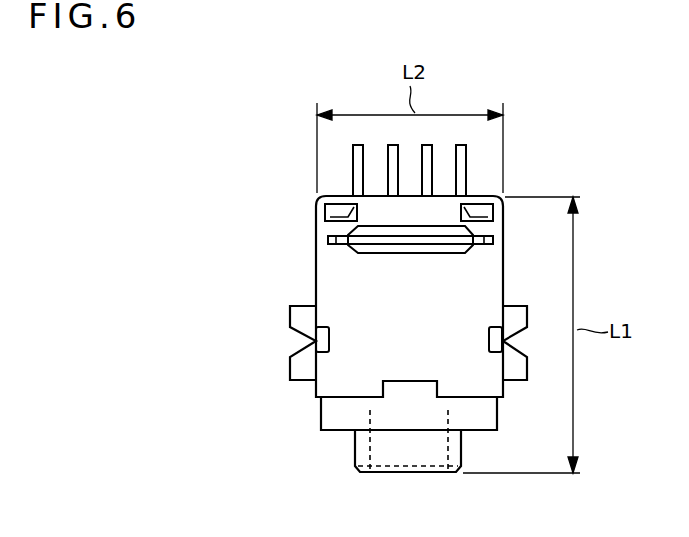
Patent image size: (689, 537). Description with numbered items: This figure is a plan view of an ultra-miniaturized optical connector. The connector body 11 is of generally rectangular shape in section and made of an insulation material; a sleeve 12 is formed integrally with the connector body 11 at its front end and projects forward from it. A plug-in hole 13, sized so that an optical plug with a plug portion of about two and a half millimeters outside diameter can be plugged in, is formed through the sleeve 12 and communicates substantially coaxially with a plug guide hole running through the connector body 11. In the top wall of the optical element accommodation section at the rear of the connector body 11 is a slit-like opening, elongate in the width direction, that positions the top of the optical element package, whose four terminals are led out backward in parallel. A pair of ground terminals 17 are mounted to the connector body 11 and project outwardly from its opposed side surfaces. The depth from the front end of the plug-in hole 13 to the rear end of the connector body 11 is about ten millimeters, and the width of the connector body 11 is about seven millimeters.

The connector body 11 is at (300, 252).
The sleeve 12 is at (355, 442).
The plug-in hole 13 is at (377, 452).
The ground terminals 17 is at (302, 367).